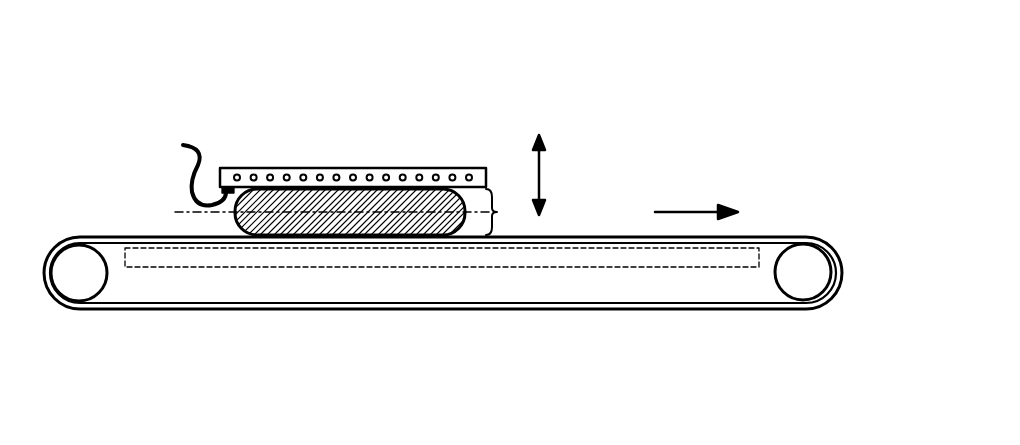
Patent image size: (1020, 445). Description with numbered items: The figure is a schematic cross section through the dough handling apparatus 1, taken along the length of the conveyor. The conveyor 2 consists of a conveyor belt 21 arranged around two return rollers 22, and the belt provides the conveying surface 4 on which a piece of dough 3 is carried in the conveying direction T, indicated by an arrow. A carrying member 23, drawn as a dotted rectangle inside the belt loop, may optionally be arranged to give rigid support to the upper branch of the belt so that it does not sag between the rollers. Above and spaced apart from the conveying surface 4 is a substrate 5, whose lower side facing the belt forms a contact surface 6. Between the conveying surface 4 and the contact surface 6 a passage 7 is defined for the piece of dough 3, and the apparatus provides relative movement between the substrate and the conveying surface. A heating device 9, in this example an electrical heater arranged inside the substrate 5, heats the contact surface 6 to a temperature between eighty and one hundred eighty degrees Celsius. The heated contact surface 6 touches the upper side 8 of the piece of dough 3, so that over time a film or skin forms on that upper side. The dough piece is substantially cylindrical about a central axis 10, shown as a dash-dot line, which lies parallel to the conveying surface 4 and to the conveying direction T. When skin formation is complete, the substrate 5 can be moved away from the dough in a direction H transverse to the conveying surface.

The apparatus 1 is at (118, 108).
The conveyor 2 is at (657, 310).
The piece of dough 3 is at (402, 226).
The conveying surface 4 is at (585, 237).
The substrate 5 is at (353, 139).
The contact surface 6 is at (200, 168).
The passage 7 is at (323, 197).
The upper side 8 is at (350, 242).
The heating device 9 is at (420, 174).
The central axis 10 is at (180, 210).
The conveyor belt 21 is at (180, 311).
The return rollers 22 is at (71, 282).
The carrying member 23 is at (250, 258).